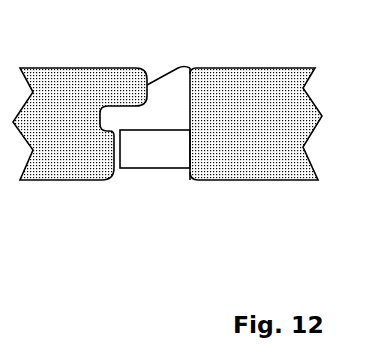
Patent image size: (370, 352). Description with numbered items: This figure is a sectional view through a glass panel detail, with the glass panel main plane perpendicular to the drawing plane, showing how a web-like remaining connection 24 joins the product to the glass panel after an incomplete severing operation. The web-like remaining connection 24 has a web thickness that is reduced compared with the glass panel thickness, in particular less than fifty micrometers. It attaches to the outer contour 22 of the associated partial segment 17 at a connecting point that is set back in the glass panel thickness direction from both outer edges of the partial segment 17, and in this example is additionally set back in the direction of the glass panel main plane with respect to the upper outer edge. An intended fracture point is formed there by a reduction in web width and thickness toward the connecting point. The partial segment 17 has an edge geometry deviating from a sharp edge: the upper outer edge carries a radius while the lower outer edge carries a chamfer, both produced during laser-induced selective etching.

The partial segment 17 is at (73, 157).
The outer contour 22 is at (204, 69).
The web-like remaining connection 24 is at (178, 138).